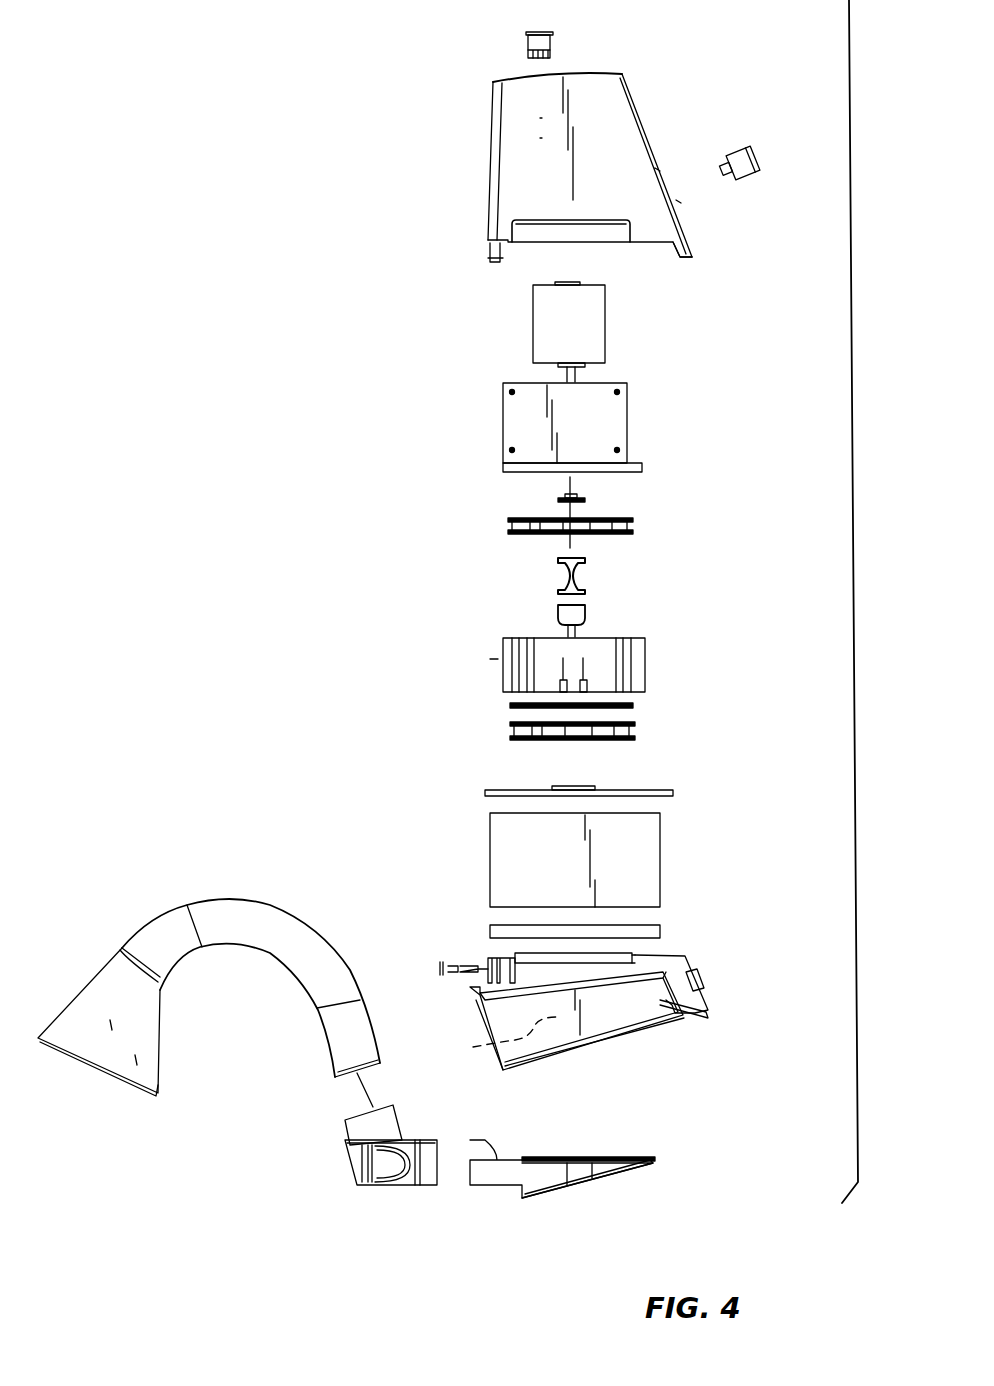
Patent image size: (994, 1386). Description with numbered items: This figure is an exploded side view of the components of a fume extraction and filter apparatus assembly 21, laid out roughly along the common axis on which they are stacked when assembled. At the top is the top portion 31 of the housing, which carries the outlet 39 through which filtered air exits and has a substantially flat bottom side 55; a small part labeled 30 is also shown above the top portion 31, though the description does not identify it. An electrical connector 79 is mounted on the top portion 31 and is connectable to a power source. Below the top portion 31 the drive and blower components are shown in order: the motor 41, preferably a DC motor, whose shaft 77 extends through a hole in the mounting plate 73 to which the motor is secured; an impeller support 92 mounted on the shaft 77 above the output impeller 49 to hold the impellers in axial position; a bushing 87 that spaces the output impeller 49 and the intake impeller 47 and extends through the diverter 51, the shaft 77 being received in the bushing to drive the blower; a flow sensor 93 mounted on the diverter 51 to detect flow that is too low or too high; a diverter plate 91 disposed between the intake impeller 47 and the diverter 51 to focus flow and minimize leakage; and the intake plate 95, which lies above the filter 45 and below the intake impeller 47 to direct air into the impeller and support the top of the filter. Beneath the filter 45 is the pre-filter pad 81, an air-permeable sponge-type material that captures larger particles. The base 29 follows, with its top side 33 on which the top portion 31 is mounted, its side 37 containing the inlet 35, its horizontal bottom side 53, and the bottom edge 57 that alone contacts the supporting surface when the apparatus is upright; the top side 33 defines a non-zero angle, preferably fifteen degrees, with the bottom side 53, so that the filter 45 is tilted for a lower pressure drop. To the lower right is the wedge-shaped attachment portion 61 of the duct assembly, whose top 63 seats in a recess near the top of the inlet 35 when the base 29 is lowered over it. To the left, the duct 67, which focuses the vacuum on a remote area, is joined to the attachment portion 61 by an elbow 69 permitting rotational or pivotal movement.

The fume extraction and filter apparatus assembly 21 is at (854, 592).
The base 29 is at (703, 987).
The connector 30 is at (522, 40).
The top portion 31 is at (621, 147).
The top side of the base 33 is at (663, 953).
The inlet 35 is at (497, 1043).
The side of the base 37 is at (677, 1010).
The outlet 39 is at (584, 72).
The motor 41 is at (608, 325).
The filter 45 is at (660, 855).
The intake impeller 47 is at (635, 732).
The output impeller 49 is at (633, 528).
The diverter 51 is at (645, 658).
The bottom side of the base 53 is at (660, 1028).
The bottom side of the top portion 55 is at (690, 258).
The bottom edge 57 is at (607, 1045).
The attachment portion 61 is at (603, 1185).
The top of the attachment portion 63 is at (620, 1143).
The duct 67 is at (323, 1067).
The elbow 69 is at (402, 1187).
The mounting plate 73 is at (627, 418).
The shaft 77 is at (576, 374).
The electrical connector 79 is at (753, 153).
The pre-filter pad 81 is at (660, 930).
The bushing 87 is at (583, 573).
The diverter plate 91 is at (633, 706).
The impeller support 92 is at (584, 500).
The flow sensor 93 is at (585, 612).
The intake plate 95 is at (673, 788).